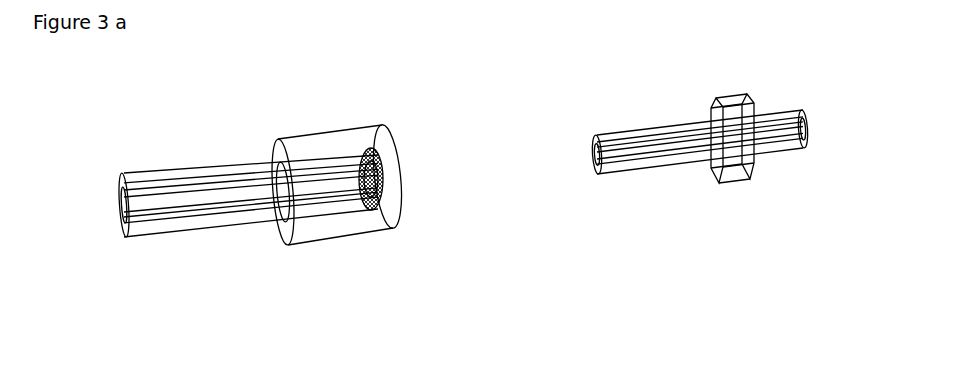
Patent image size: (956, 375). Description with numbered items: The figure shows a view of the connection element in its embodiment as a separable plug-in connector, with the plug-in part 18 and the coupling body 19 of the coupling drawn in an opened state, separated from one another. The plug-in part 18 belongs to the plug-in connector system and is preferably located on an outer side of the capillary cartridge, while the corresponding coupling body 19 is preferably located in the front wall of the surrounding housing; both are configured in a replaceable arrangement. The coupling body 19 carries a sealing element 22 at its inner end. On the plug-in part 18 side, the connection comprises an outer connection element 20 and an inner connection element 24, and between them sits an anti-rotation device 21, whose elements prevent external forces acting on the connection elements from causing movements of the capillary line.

The plug-in part of the coupling 18 is at (672, 164).
The coupling body 19 is at (288, 244).
The outer connection element 20 is at (125, 210).
The anti-rotation device 21 is at (743, 178).
The sealing element 22 is at (381, 208).
The inner connection element 24 is at (807, 152).